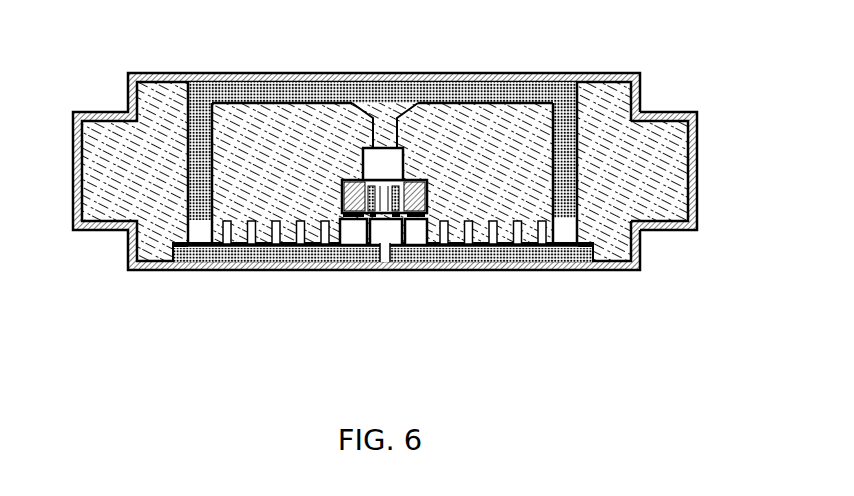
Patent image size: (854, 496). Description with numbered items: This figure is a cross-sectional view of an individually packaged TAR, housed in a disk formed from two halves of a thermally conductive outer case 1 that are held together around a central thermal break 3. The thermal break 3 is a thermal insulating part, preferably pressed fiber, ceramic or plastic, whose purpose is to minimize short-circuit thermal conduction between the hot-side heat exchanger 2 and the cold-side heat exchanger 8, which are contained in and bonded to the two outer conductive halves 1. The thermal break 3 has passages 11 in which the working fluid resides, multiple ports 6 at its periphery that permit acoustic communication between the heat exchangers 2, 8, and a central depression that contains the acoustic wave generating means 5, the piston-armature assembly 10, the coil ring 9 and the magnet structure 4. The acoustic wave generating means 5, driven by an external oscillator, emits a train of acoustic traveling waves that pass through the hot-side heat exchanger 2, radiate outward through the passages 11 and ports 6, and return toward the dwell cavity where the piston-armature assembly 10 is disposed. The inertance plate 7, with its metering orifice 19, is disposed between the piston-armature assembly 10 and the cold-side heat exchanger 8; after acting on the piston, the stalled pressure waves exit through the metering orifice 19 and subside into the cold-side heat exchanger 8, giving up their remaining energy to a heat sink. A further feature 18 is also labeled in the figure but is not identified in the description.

The outer case 1 is at (170, 73).
The hot-side heat exchanger 2 is at (260, 103).
The thermal break 3 is at (306, 118).
The magnet structure 4 is at (415, 185).
The acoustic wave generating means 5 is at (380, 158).
The ports 6 is at (548, 107).
The inertance plate 7 is at (203, 248).
The cold-side heat exchanger 8 is at (240, 262).
The coil ring 9 is at (367, 223).
The piston-armature assembly 10 is at (407, 220).
The working fluid passages 11 is at (490, 243).
The housing flange 18 is at (698, 153).
The metering orifice 19 is at (384, 262).